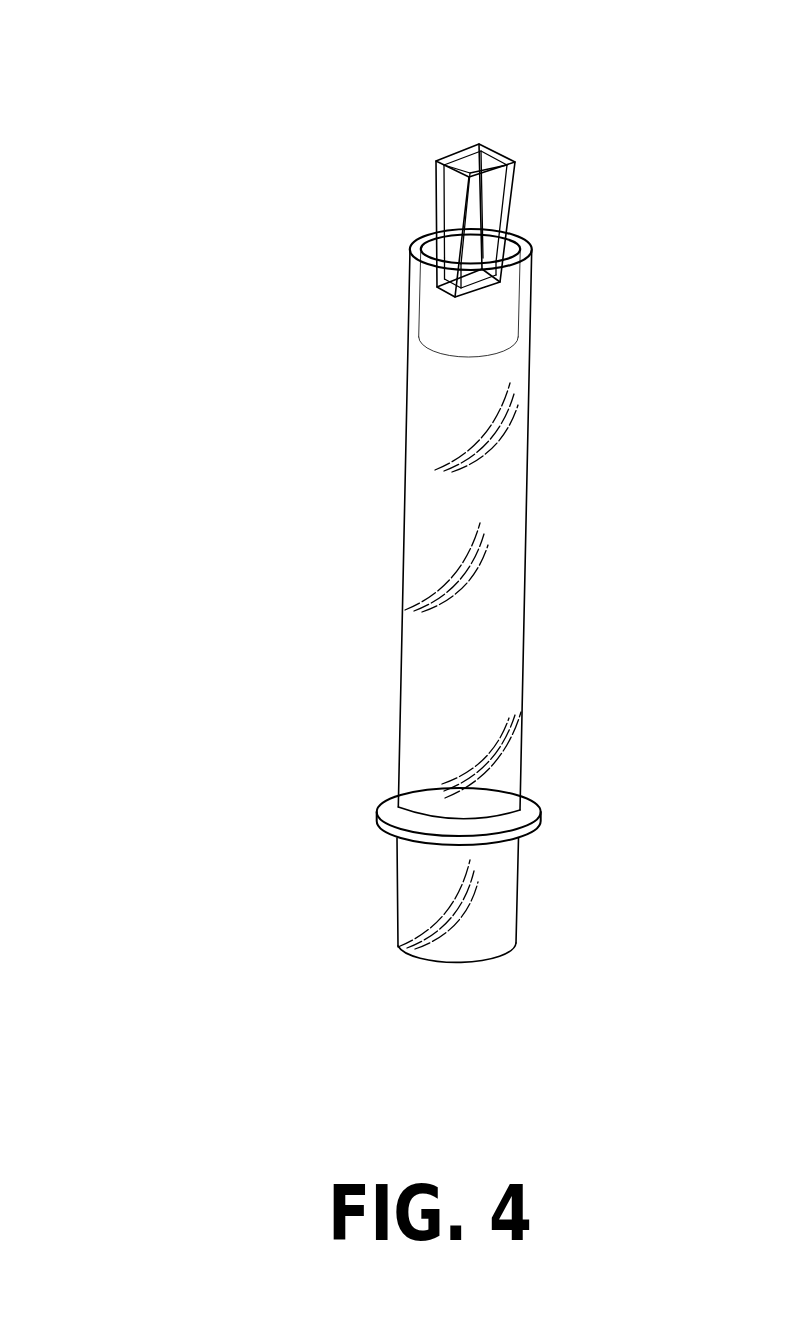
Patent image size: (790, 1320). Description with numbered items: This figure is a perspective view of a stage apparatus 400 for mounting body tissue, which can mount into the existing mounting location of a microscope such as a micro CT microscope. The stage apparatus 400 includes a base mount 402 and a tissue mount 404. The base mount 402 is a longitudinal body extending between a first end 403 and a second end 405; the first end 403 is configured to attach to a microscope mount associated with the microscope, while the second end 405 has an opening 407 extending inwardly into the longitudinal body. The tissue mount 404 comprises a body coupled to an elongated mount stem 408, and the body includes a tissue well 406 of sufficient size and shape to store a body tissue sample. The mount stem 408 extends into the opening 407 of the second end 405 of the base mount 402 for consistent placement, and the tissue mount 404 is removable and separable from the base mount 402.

The stage apparatus 400 is at (175, 363).
The base mount 402 is at (407, 517).
The first end 403 is at (502, 963).
The tissue mount 404 is at (458, 148).
The second end 405 is at (538, 243).
The tissue well 406 is at (455, 223).
The opening 407 is at (443, 335).
The mount stem 408 is at (467, 292).